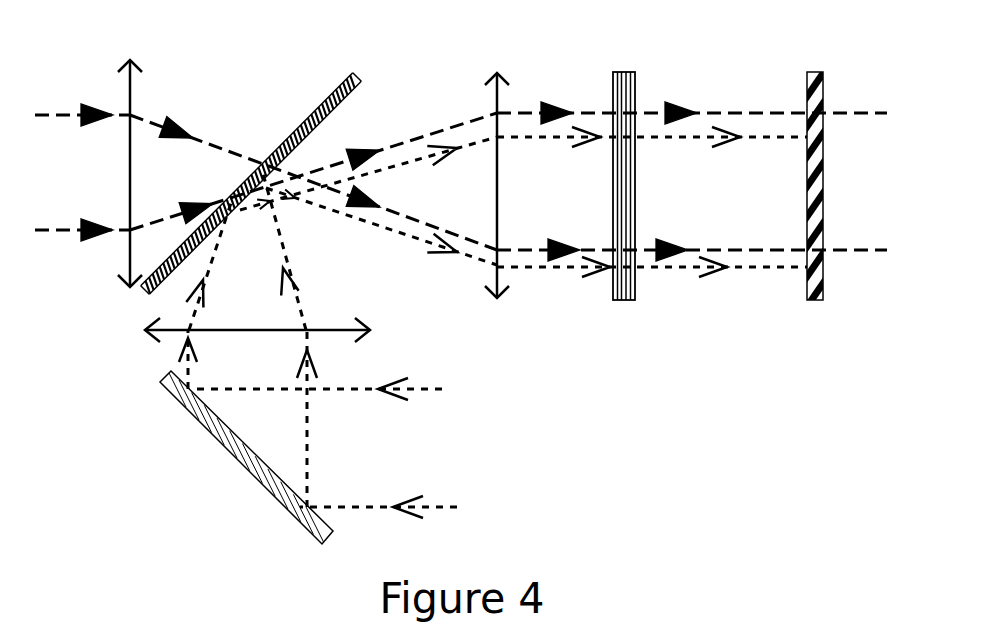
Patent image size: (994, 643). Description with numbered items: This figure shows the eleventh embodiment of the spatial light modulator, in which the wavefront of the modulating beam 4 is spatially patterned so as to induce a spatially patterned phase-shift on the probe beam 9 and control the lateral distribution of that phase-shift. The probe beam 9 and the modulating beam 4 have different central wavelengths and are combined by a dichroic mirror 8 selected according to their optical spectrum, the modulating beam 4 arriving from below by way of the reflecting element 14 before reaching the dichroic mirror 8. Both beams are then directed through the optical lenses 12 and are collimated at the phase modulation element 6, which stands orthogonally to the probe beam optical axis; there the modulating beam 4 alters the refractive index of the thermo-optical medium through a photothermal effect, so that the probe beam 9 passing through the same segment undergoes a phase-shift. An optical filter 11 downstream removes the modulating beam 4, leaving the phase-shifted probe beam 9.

The probe beam 9 is at (63, 110).
The dichroic mirror 8 is at (360, 73).
The optical lenses 12 is at (498, 72).
The phase modulation element 6 is at (633, 71).
The optical filter 11 is at (822, 72).
The modulating beam 4 is at (307, 360).
The mirror 14 is at (160, 382).